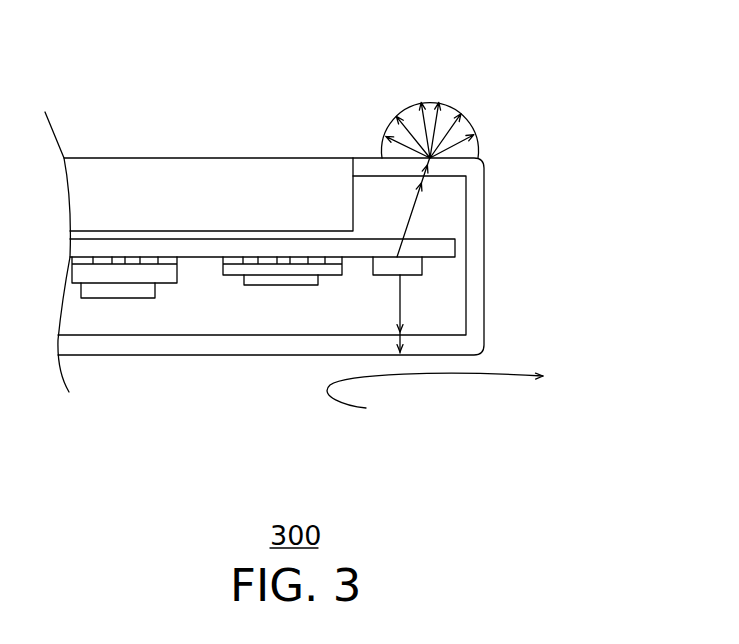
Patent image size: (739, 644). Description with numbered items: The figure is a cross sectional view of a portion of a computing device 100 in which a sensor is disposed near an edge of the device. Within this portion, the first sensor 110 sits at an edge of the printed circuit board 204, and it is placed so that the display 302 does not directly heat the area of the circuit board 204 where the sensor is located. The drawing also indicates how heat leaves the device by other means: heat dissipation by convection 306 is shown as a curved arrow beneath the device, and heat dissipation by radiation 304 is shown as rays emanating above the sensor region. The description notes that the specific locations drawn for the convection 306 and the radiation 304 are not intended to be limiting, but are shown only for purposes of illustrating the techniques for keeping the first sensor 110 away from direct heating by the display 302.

The computing device 100 is at (487, 217).
The first sensor 110 is at (407, 274).
The printed circuit board 204 is at (455, 257).
The display 302 is at (182, 157).
The radiation 304 is at (458, 118).
The convection 306 is at (420, 378).